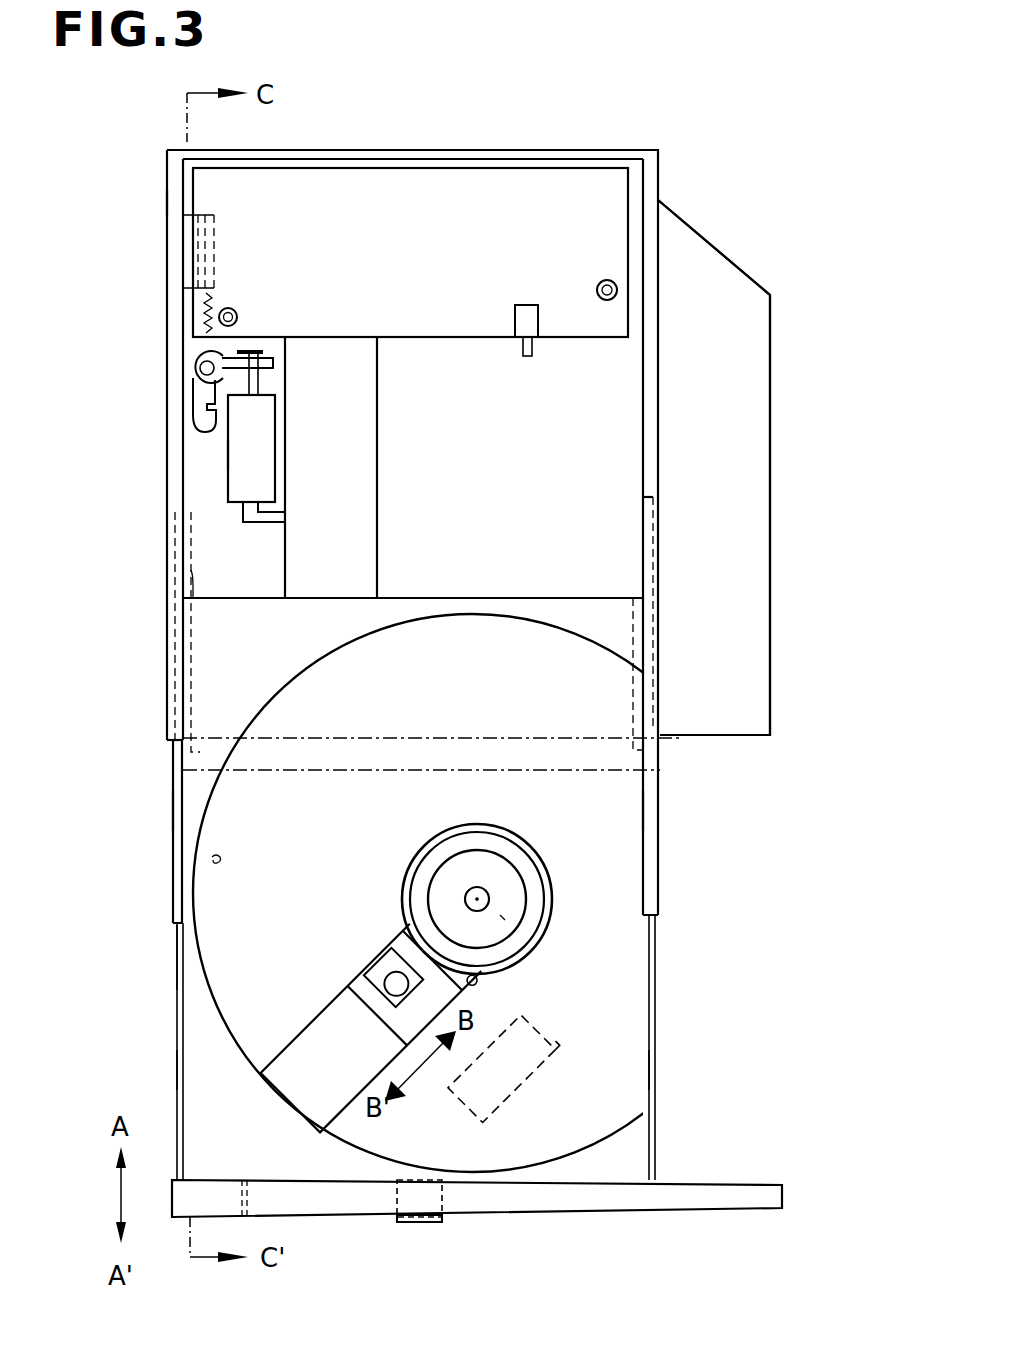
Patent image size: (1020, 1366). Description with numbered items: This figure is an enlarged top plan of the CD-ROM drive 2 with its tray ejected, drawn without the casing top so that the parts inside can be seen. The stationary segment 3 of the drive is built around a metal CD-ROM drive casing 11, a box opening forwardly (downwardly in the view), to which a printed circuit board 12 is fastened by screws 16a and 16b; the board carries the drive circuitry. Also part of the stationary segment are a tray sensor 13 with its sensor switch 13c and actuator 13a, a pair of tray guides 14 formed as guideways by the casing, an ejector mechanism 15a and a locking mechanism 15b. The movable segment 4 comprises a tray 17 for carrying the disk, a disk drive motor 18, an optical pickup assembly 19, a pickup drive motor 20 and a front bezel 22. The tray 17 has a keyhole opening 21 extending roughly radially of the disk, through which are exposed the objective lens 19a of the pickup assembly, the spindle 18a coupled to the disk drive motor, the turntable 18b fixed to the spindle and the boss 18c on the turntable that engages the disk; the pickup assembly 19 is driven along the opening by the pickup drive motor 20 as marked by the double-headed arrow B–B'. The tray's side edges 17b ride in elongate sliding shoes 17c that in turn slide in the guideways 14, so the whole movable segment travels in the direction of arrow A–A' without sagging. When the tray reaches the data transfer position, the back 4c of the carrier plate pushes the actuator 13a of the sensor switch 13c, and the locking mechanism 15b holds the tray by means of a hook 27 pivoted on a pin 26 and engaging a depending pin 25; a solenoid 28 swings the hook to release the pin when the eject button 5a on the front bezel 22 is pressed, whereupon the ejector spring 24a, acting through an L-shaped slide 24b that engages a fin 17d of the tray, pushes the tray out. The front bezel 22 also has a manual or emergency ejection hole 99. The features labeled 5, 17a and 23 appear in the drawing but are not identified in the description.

The CD-ROM drive 2 is at (805, 240).
The stationary segment 3 is at (784, 360).
The movable segment 4 is at (662, 1036).
The back of the carrier plate 4c is at (662, 770).
The guide member 5 is at (426, 1231).
The eject button 5a is at (442, 1219).
The CD-ROM drive casing 11 is at (392, 150).
The printed circuit board 12 is at (474, 168).
The tray sensor 13 is at (532, 285).
The actuator 13a is at (540, 348).
The sensor switch 13c is at (515, 322).
The tray guides 14 is at (166, 469).
The ejector mechanism 15a is at (155, 192).
The locking mechanism 15b is at (216, 450).
The screw 16a is at (615, 290).
The screw 16b is at (186, 303).
The tray 17 is at (642, 972).
The frame upper portion 17a is at (180, 935).
The side edges 17b is at (180, 1070).
The sliding shoes 17c is at (173, 812).
The fin 17d is at (191, 578).
The disk drive motor 18 is at (566, 881).
The spindle 18a is at (490, 897).
The turntable 18b is at (550, 901).
The boss 18c is at (503, 916).
The optical pickup assembly 19 is at (343, 1009).
The objective lens 19a is at (383, 976).
The pickup drive motor 20 is at (554, 1052).
The keyhole opening 21 is at (482, 983).
The front bezel 22 is at (611, 1205).
The partition plate 23 is at (285, 556).
The ejector spring 24a is at (206, 320).
The slide 24b is at (190, 222).
The depending pin 25 is at (212, 860).
The pivot pin 26 is at (197, 368).
The hook 27 is at (205, 401).
The solenoid 28 is at (232, 484).
The emergency ejection hole 99 is at (247, 1217).